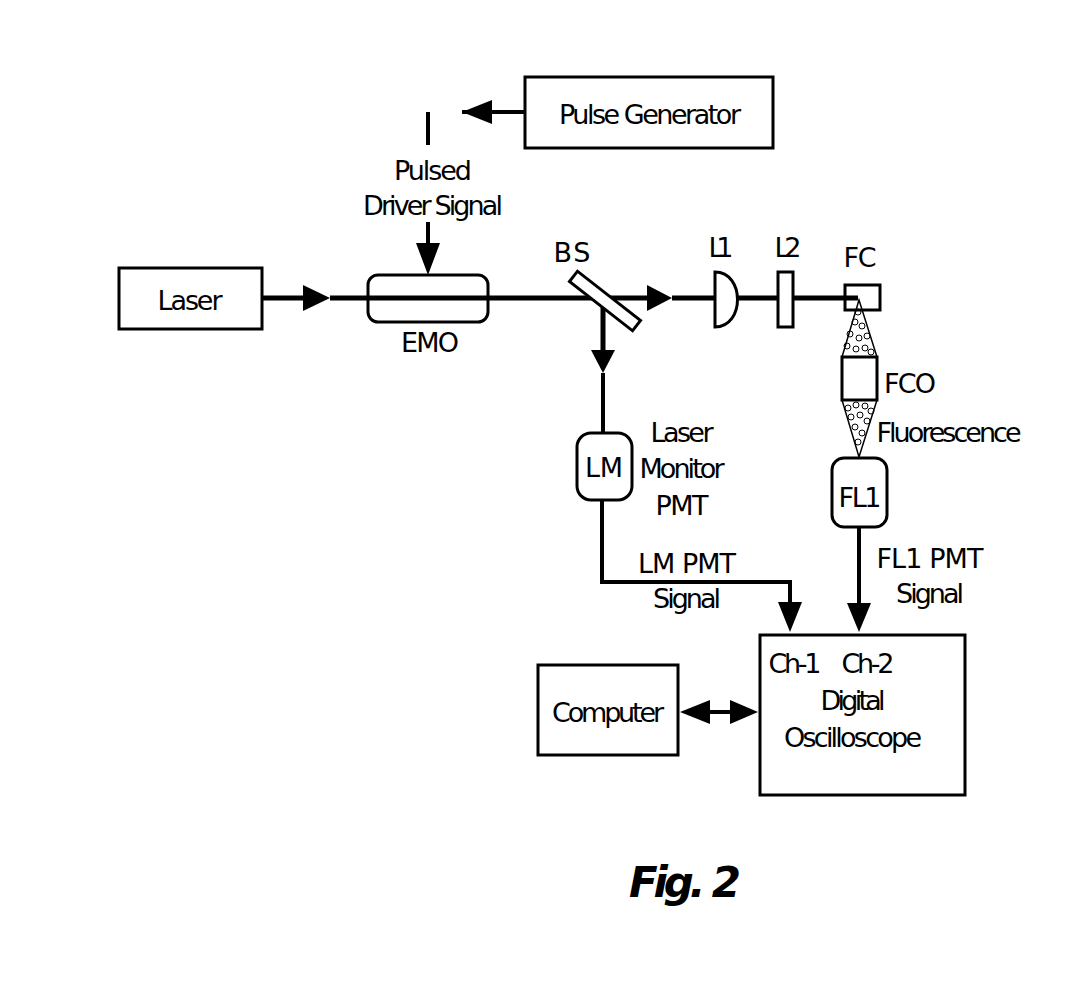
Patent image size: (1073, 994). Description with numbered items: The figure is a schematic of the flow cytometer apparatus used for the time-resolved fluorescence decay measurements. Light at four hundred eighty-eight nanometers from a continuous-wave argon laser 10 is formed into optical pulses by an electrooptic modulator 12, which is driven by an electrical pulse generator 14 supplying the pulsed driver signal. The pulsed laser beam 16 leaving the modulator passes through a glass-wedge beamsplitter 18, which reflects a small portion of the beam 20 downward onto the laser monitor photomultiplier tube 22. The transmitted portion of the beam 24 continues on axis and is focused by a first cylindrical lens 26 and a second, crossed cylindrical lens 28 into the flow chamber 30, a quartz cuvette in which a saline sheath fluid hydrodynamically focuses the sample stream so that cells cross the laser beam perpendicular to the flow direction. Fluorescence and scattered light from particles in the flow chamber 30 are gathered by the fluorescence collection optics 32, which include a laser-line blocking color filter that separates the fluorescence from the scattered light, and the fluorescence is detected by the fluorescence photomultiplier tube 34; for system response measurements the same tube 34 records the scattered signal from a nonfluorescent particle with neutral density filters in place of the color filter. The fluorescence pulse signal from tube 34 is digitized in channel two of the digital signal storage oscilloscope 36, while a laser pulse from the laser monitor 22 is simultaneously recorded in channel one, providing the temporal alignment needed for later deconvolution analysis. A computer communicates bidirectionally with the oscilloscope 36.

The cw Ar-laser 10 is at (195, 333).
The electrooptic modulator 12 is at (367, 319).
The electrical pulse generator 14 is at (605, 76).
The pulsed laser beam 16 is at (524, 301).
The glass-wedge beamsplitter 18 is at (601, 274).
The reflected portion of the beam 20 is at (597, 325).
The laser monitor photomultiplier tube 22 is at (574, 463).
The transmitted portion of the beam 24 is at (663, 305).
The cylindrical lens L1 26 is at (739, 314).
The cylindrical lens L2 28 is at (775, 327).
The flow chamber 30 is at (880, 284).
The fluorescence collection optics 32 is at (879, 349).
The fluorescence photomultiplier tube 34 is at (890, 479).
The digital signal storage oscilloscope 36 is at (832, 799).